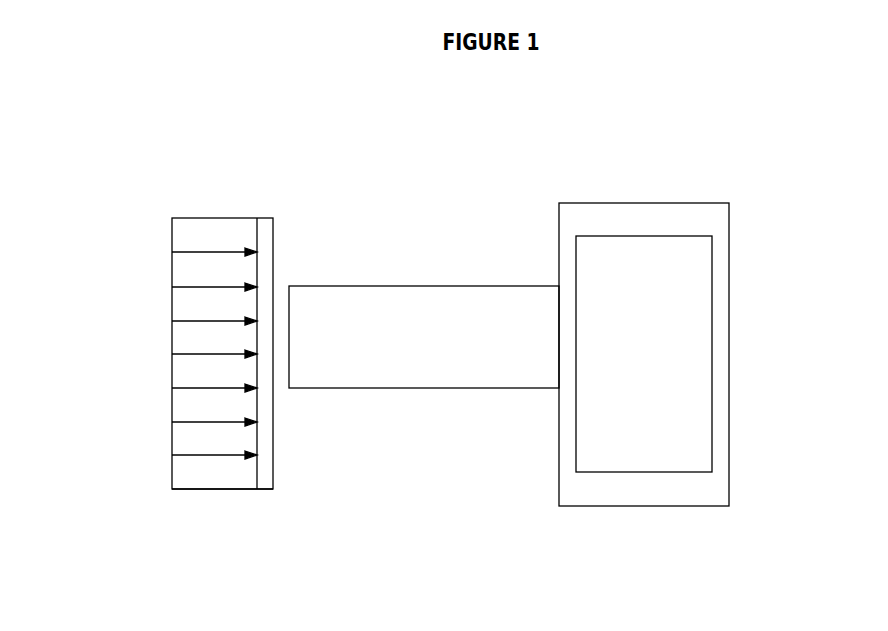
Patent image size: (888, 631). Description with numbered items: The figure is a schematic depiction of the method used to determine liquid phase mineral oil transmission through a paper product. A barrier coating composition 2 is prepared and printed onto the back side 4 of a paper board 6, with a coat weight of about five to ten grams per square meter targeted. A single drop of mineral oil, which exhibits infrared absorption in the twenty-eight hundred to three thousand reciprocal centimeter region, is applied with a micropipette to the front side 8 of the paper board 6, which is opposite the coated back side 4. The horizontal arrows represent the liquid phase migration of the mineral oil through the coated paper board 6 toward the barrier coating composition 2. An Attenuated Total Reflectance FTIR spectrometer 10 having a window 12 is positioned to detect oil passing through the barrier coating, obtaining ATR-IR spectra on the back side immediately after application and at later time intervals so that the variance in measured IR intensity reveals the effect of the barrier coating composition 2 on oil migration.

The barrier coating composition 2 is at (273, 218).
The back side 4 is at (257, 268).
The paper board 6 is at (223, 489).
The front side 8 is at (172, 370).
The Attenuated Total Reflectance (ATR) FTIR spectrometer 10 is at (627, 203).
The window 12 is at (693, 355).